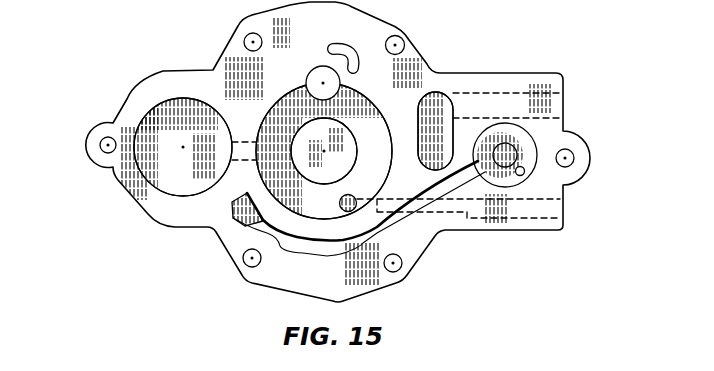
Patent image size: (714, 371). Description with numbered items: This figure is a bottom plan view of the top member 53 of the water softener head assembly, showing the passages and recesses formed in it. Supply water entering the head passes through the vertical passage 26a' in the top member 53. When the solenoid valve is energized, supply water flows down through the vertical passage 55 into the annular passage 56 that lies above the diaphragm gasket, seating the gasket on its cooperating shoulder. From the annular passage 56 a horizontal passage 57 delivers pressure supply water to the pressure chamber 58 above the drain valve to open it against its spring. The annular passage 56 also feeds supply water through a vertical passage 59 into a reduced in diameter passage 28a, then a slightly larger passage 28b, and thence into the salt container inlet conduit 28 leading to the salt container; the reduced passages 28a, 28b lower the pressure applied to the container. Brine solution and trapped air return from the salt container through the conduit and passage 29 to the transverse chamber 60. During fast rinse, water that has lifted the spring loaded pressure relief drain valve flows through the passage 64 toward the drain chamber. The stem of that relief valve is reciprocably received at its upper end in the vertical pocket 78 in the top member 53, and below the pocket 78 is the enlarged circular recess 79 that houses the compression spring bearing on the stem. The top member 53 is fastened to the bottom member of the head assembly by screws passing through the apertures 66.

The top member of head assembly 53 is at (225, 50).
The vertical passage 55 is at (322, 77).
The annular passage 56 is at (291, 98).
The horizontal passage 57 is at (243, 142).
The pressure chamber 58 is at (185, 98).
The vertical passage 59 is at (339, 203).
The transverse chamber 60 is at (427, 109).
The passage 64 is at (313, 247).
The apertures 66 is at (100, 145).
The vertical pocket 78 is at (500, 156).
The enlarged circular recess 79 is at (525, 173).
The vertical passage 26a' is at (354, 45).
The salt container inlet conduit 28 is at (530, 200).
The reduced in diameter passage 28a is at (367, 199).
The passage 28b is at (451, 200).
The conduit and passage 29 is at (507, 100).